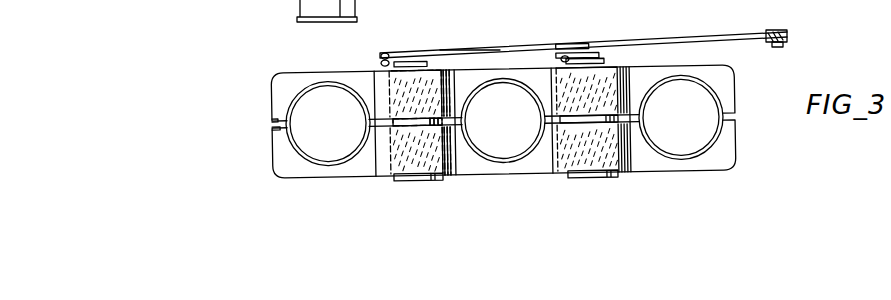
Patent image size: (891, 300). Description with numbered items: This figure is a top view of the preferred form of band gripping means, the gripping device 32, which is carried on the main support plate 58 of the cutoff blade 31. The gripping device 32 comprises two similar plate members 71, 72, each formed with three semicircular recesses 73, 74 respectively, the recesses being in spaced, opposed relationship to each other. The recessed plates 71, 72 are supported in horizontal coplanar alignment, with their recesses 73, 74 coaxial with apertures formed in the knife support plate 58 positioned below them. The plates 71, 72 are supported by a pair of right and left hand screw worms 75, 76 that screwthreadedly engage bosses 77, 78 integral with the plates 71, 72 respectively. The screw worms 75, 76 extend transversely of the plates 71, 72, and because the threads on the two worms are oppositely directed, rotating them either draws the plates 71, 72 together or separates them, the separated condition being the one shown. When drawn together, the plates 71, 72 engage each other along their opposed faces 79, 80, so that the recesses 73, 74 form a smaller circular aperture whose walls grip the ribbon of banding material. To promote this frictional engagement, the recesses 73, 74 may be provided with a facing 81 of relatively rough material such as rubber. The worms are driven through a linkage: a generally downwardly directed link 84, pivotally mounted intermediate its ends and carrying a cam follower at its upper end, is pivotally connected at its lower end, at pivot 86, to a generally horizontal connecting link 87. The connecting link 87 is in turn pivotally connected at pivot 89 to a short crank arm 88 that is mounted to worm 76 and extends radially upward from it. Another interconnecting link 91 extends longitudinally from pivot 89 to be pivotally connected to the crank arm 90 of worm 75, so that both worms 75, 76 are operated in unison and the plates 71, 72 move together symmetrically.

The cutoff blade 31 is at (125, 8).
The main support plate 58 is at (200, 0).
The gripping device 32 is at (314, 195).
The plate member 71 is at (278, 93).
The plate member 72 is at (280, 159).
The semicircular recess 73 is at (345, 100).
The semicircular recess 74 is at (340, 148).
The screw worm 75 is at (393, 184).
The screw worm 76 is at (640, 186).
The boss 77 is at (382, 80).
The boss 78 is at (560, 166).
The opposed face 79 is at (275, 121).
The opposed face 80 is at (278, 128).
The facing 81 is at (526, 96).
The link 84 is at (784, 32).
The pivot 86 is at (781, 47).
The connecting link 87 is at (690, 40).
The crank arm 88 is at (595, 52).
The pivot 89 is at (583, 33).
The crank arm 90 is at (440, 53).
The interconnecting link 91 is at (488, 50).